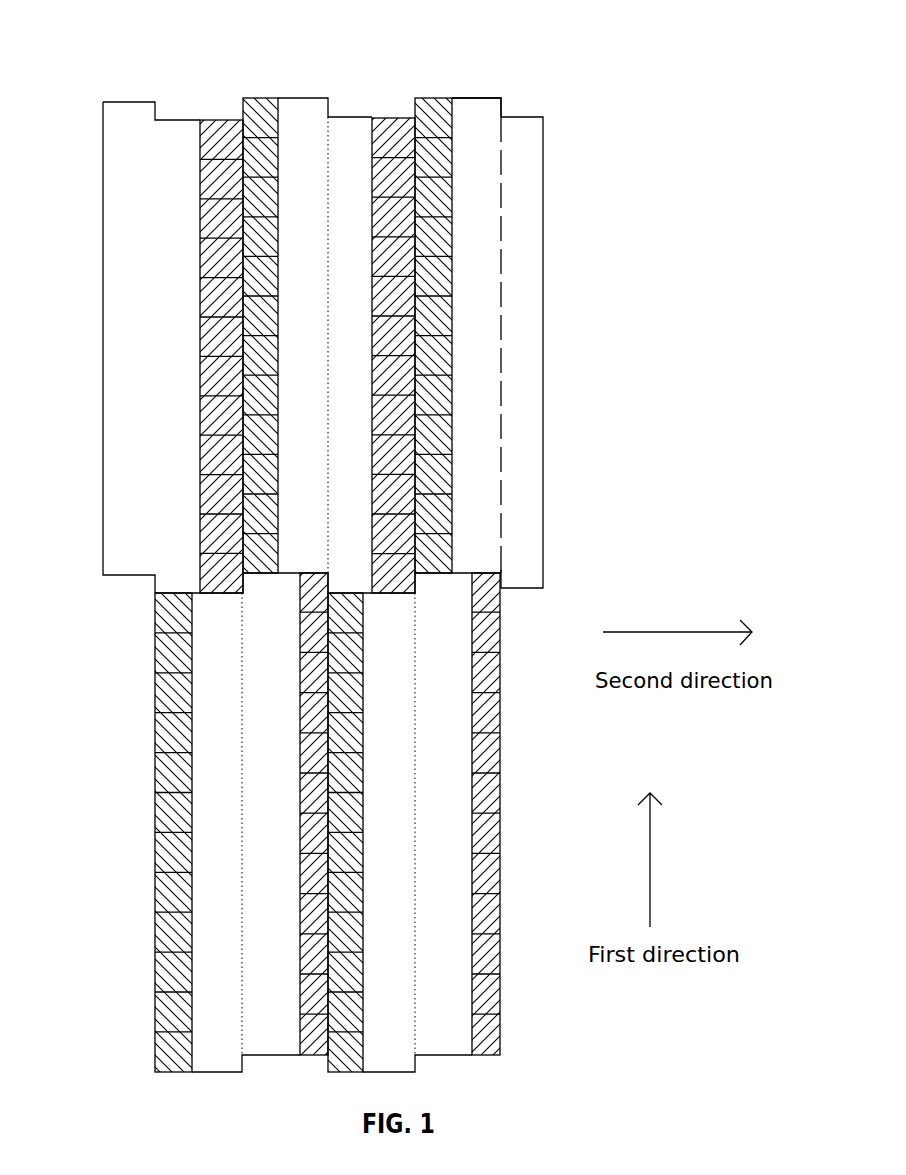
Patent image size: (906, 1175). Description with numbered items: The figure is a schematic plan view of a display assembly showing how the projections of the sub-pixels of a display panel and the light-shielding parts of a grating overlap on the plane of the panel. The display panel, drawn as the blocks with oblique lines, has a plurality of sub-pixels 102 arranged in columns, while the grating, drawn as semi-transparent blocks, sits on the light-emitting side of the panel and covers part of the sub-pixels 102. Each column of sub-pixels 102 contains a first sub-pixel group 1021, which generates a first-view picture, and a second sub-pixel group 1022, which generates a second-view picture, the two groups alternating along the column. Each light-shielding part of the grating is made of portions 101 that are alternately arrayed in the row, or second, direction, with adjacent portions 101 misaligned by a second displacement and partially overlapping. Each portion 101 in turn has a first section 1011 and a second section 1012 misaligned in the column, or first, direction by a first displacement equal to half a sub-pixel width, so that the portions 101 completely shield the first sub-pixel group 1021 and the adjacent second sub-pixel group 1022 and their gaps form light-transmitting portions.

The portion of light-shielding part 101 is at (128, 100).
The first section 1011 is at (467, 107).
The second section 1012 is at (533, 140).
The sub-pixel 102 is at (243, 118).
The first sub-pixel group 1021 is at (223, 117).
The second sub-pixel group 1022 is at (155, 658).